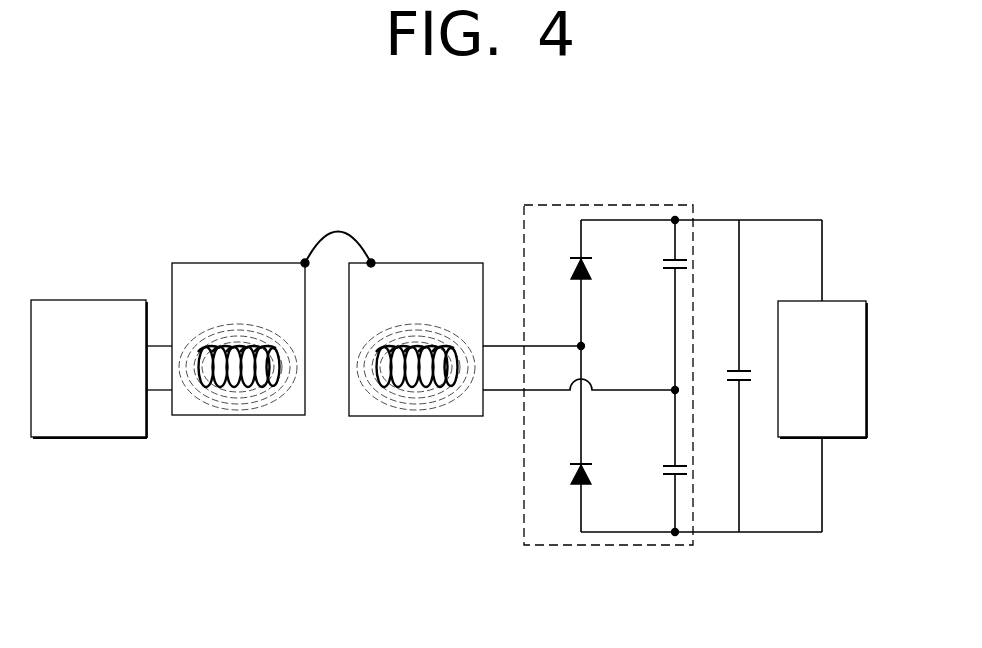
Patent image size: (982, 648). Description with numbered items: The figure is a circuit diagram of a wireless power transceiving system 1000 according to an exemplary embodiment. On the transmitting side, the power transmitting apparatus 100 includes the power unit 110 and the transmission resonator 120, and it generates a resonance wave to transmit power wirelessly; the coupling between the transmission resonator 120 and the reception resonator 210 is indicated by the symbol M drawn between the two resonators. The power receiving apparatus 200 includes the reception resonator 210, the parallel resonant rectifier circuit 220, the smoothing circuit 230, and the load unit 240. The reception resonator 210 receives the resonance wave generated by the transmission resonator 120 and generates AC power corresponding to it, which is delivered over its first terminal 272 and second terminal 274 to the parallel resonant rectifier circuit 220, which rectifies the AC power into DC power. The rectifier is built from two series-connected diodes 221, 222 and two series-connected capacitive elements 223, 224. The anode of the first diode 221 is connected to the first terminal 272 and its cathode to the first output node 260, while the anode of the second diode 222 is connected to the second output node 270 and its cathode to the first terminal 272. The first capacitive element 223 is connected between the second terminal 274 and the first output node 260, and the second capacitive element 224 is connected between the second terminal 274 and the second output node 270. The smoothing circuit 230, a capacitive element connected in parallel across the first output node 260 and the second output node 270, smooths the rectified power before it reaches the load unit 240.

The wireless power transmission system 1000 is at (400, 152).
The power transmitting apparatus 100 is at (98, 218).
The power unit 110 is at (90, 438).
The transmission resonator 120 is at (236, 416).
The mutual inductance coupling M is at (338, 235).
The power receiving apparatus 200 is at (792, 168).
The reception resonator 210 is at (396, 416).
The parallel resonant rectifier circuit 220 is at (604, 205).
The first diode 221 is at (575, 258).
The second diode 222 is at (576, 462).
The first capacitive element 223 is at (667, 262).
The second capacitive element 224 is at (670, 463).
The smoothing circuit 230 is at (730, 371).
The load unit 240 is at (852, 300).
The first output node 260 is at (678, 216).
The second output node 270 is at (676, 536).
The first terminal 272 is at (489, 342).
The second terminal 274 is at (489, 395).